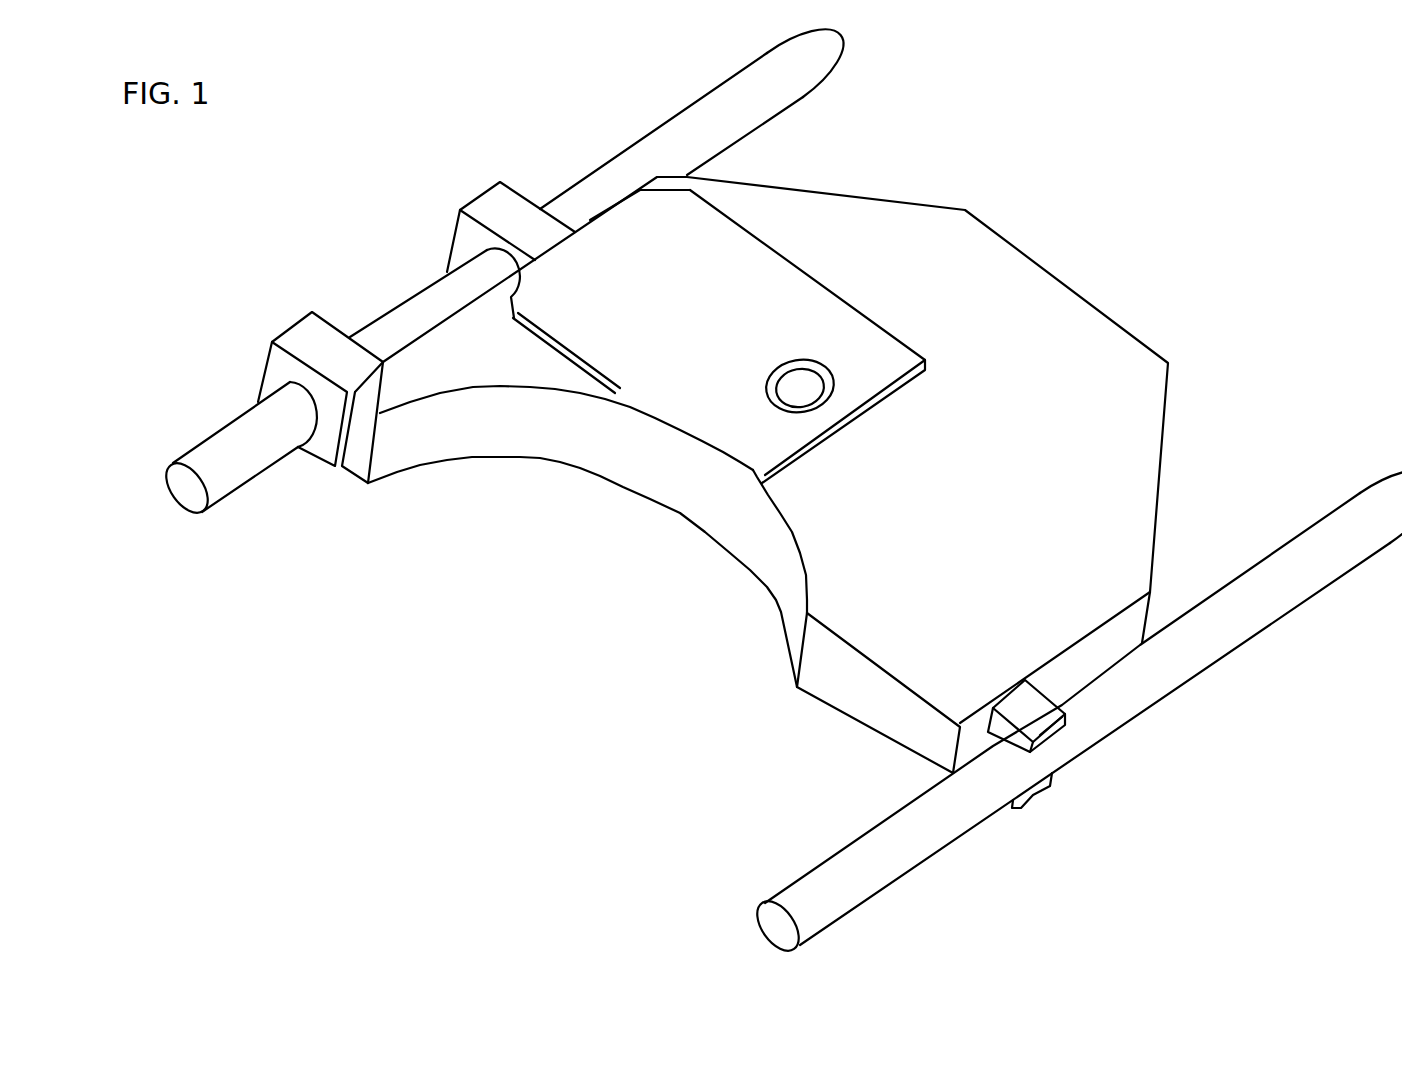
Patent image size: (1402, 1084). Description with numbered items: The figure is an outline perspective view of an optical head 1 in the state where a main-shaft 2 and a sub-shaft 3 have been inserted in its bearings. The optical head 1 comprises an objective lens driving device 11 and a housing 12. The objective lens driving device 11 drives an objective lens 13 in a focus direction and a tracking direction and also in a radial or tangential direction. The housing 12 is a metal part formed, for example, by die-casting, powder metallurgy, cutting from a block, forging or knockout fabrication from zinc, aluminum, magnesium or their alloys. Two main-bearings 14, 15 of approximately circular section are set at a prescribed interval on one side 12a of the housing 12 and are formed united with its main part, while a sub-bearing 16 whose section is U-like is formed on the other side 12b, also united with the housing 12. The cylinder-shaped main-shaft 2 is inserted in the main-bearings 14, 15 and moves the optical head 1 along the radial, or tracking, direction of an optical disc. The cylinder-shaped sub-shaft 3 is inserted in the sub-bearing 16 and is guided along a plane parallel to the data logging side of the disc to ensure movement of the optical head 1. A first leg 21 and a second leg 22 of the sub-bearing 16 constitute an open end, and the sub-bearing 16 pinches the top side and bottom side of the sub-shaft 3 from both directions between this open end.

The optical head 1 is at (797, 449).
The main-shaft 2 is at (486, 274).
The sub-shaft 3 is at (1075, 719).
The objective lens driving device 11 is at (719, 288).
The housing 12 is at (587, 536).
The side of housing 12a is at (490, 228).
The side of housing 12b is at (1257, 644).
The objective lens 13 is at (865, 406).
The main-bearing 14 is at (299, 359).
The main-bearing 15 is at (511, 208).
The sub-bearing 16 is at (1108, 741).
The 1st leg 21 is at (1154, 725).
The 2nd leg 22 is at (1052, 840).